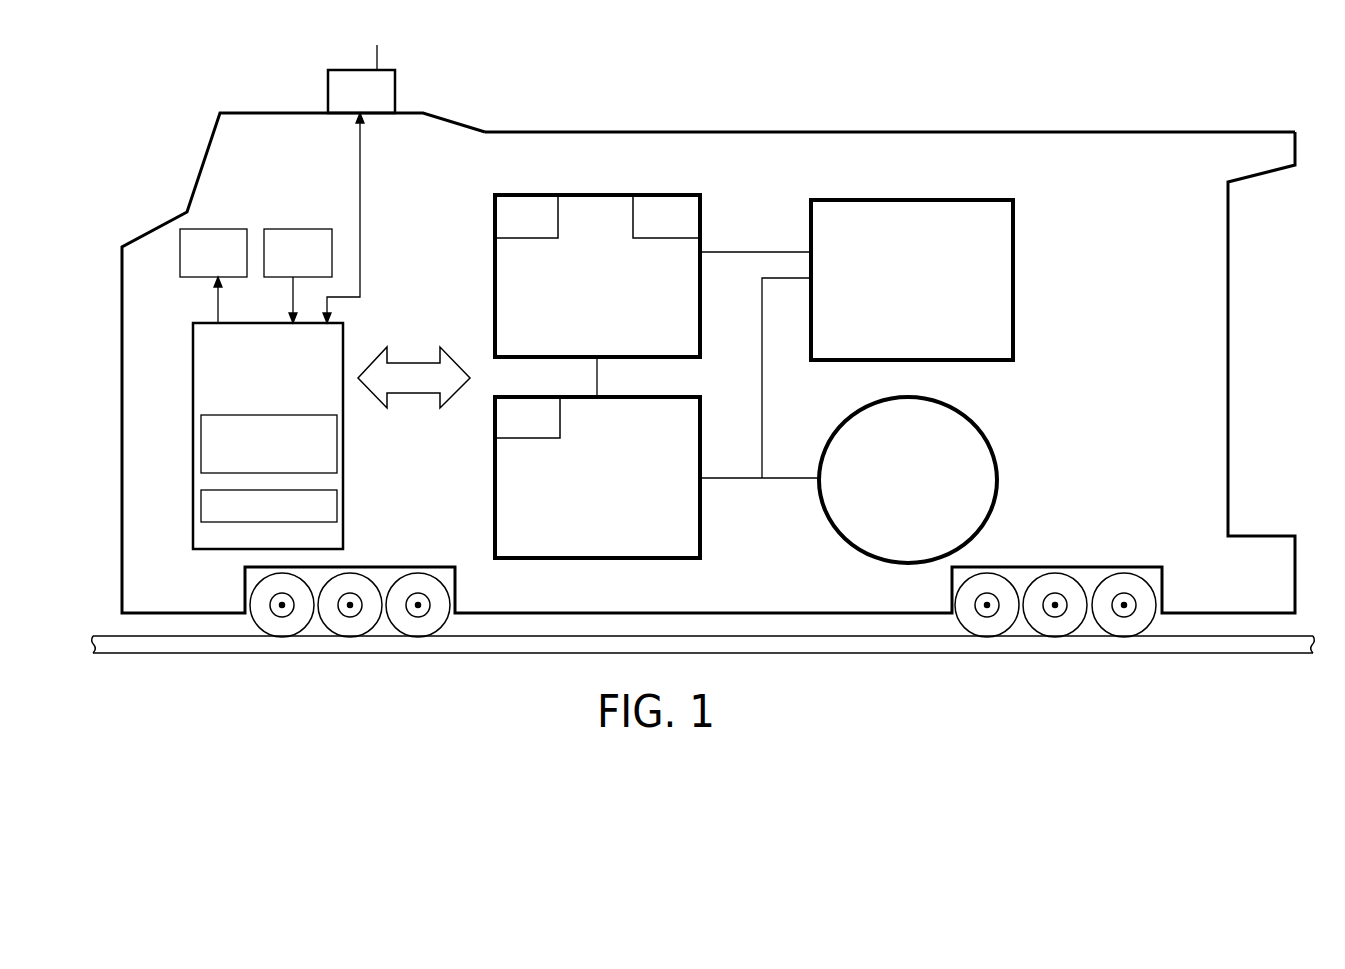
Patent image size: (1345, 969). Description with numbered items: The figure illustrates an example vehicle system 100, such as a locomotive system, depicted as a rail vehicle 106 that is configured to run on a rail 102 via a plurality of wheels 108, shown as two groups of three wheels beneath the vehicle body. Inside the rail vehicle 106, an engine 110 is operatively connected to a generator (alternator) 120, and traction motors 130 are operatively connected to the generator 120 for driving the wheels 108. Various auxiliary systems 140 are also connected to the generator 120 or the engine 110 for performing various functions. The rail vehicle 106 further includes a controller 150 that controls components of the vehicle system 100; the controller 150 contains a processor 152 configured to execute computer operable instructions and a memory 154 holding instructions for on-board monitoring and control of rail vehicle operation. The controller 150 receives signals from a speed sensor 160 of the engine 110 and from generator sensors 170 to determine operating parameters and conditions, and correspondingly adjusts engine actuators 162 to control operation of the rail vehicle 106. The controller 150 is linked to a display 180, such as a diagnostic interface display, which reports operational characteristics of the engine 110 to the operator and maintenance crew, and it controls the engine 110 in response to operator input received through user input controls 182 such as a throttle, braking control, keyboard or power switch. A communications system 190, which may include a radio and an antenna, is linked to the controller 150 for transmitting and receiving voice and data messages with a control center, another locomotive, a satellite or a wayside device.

The vehicle system 100 is at (708, 324).
The rail 102 is at (1227, 654).
The rail vehicle 106 is at (987, 132).
The wheels 108 is at (443, 593).
The engine 110 is at (653, 296).
The generator (alternator) 120 is at (657, 418).
The traction motors 130 is at (908, 480).
The auxiliary systems 140 is at (912, 280).
The controller 150 is at (243, 436).
The processor 152 is at (205, 442).
The memory 154 is at (337, 494).
The speed sensor 160 is at (526, 216).
The engine actuators 162 is at (666, 216).
The generator sensors 170 is at (527, 417).
The display 180 is at (213, 276).
The user input controls 182 is at (298, 276).
The communications system 190 is at (359, 184).